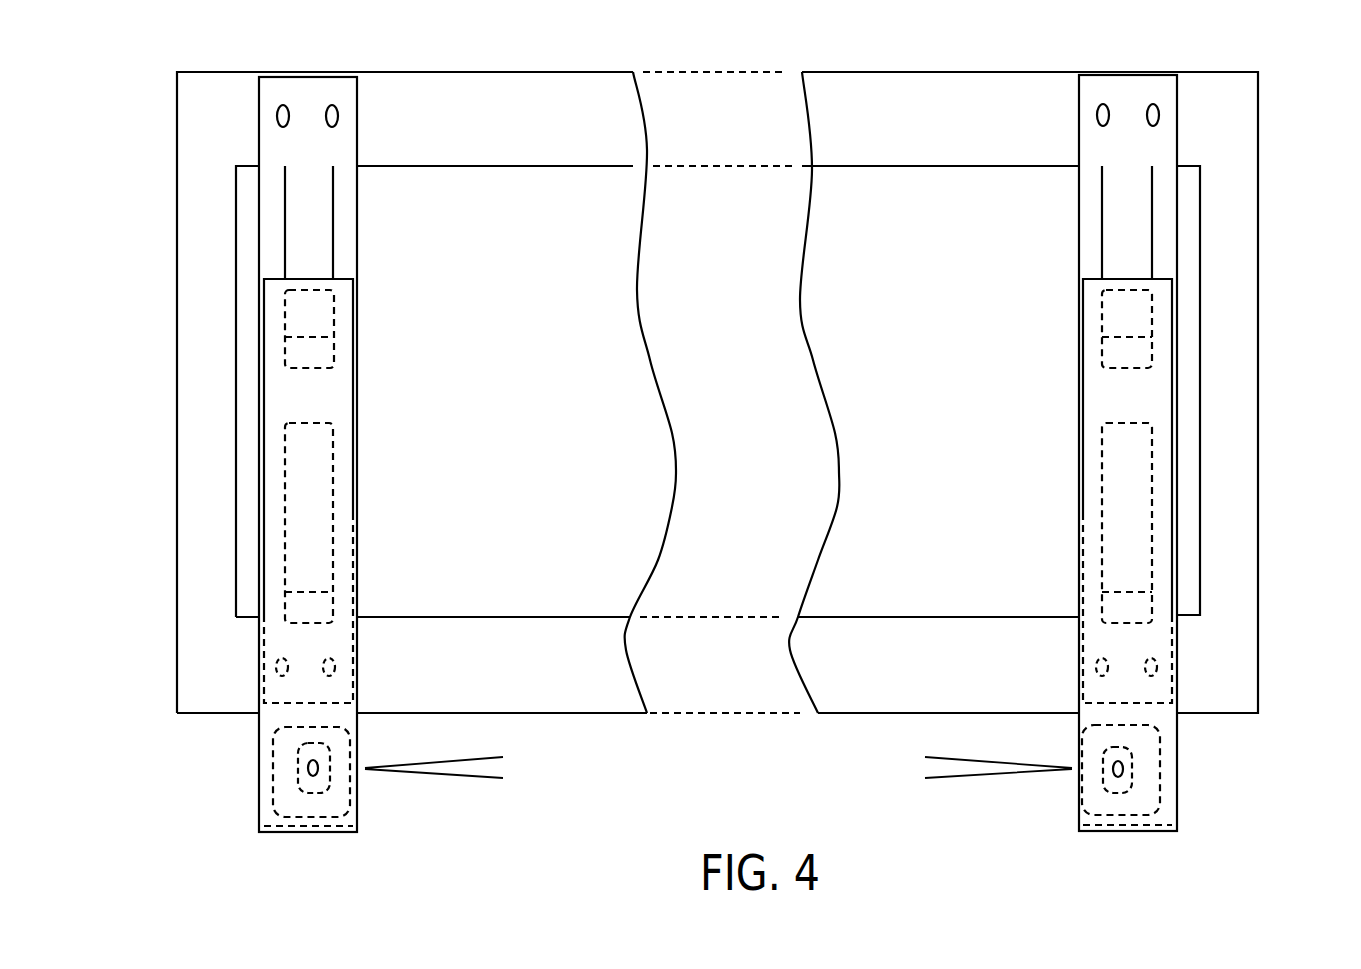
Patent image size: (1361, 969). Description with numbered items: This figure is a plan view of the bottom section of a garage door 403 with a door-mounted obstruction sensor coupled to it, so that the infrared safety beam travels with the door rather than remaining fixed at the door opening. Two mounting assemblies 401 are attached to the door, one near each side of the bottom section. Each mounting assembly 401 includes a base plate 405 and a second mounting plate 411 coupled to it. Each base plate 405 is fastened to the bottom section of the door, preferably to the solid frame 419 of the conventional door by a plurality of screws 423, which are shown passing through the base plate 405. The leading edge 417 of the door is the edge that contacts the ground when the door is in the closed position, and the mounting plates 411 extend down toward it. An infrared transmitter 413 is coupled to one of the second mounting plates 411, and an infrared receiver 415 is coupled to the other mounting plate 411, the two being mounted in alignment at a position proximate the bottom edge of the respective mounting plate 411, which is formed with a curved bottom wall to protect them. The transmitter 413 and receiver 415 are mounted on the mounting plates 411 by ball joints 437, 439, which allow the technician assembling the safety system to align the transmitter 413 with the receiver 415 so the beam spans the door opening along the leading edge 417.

The mounting assembly 401 is at (388, 363).
The garage door 403 is at (533, 633).
The base plate 405 is at (258, 125).
The second mounting plate 411 is at (252, 305).
The infrared transmitter 413 is at (303, 798).
The infrared receiver 415 is at (1128, 798).
The leading edge 417 is at (485, 715).
The frame 419 is at (968, 95).
The screws 423 is at (332, 105).
The ball joint 437 is at (300, 773).
The ball joint 439 is at (1136, 770).